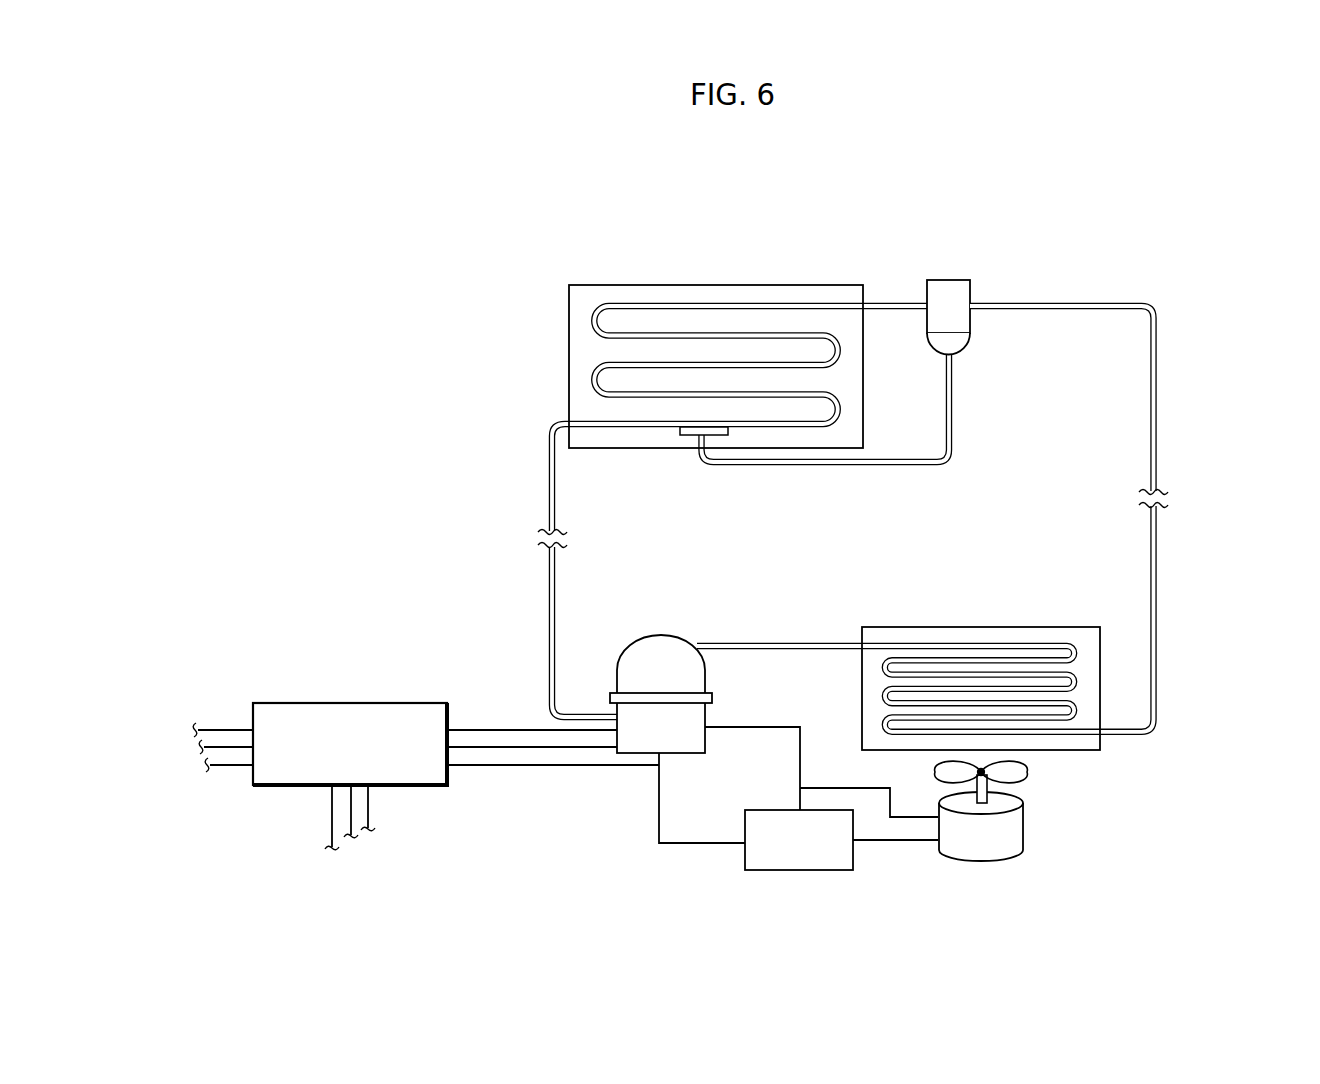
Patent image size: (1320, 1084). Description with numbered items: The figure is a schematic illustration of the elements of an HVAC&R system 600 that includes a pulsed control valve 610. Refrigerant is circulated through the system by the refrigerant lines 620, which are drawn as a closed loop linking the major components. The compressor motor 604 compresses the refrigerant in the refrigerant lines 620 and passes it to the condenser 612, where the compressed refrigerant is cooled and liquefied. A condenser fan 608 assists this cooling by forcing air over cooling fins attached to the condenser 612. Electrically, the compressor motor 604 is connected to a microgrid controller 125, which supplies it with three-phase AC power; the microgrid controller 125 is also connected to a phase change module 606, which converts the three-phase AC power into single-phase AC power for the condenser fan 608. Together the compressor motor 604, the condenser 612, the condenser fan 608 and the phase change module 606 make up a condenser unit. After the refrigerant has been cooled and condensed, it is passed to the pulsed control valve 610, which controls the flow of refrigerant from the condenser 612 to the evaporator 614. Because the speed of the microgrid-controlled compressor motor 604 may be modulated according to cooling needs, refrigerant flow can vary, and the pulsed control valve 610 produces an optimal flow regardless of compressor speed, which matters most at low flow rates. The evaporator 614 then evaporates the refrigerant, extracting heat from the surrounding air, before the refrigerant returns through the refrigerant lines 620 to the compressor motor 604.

The HVAC&R system 600 is at (212, 252).
The evaporator 614 is at (677, 281).
The pulsed control valve 610 is at (948, 278).
The refrigerant lines 620 is at (1157, 400).
The condenser 612 is at (982, 627).
The compressor motor 604 is at (705, 720).
The microgrid controller 125 is at (350, 702).
The phase change module 606 is at (800, 872).
The condenser fan 608 is at (1027, 823).